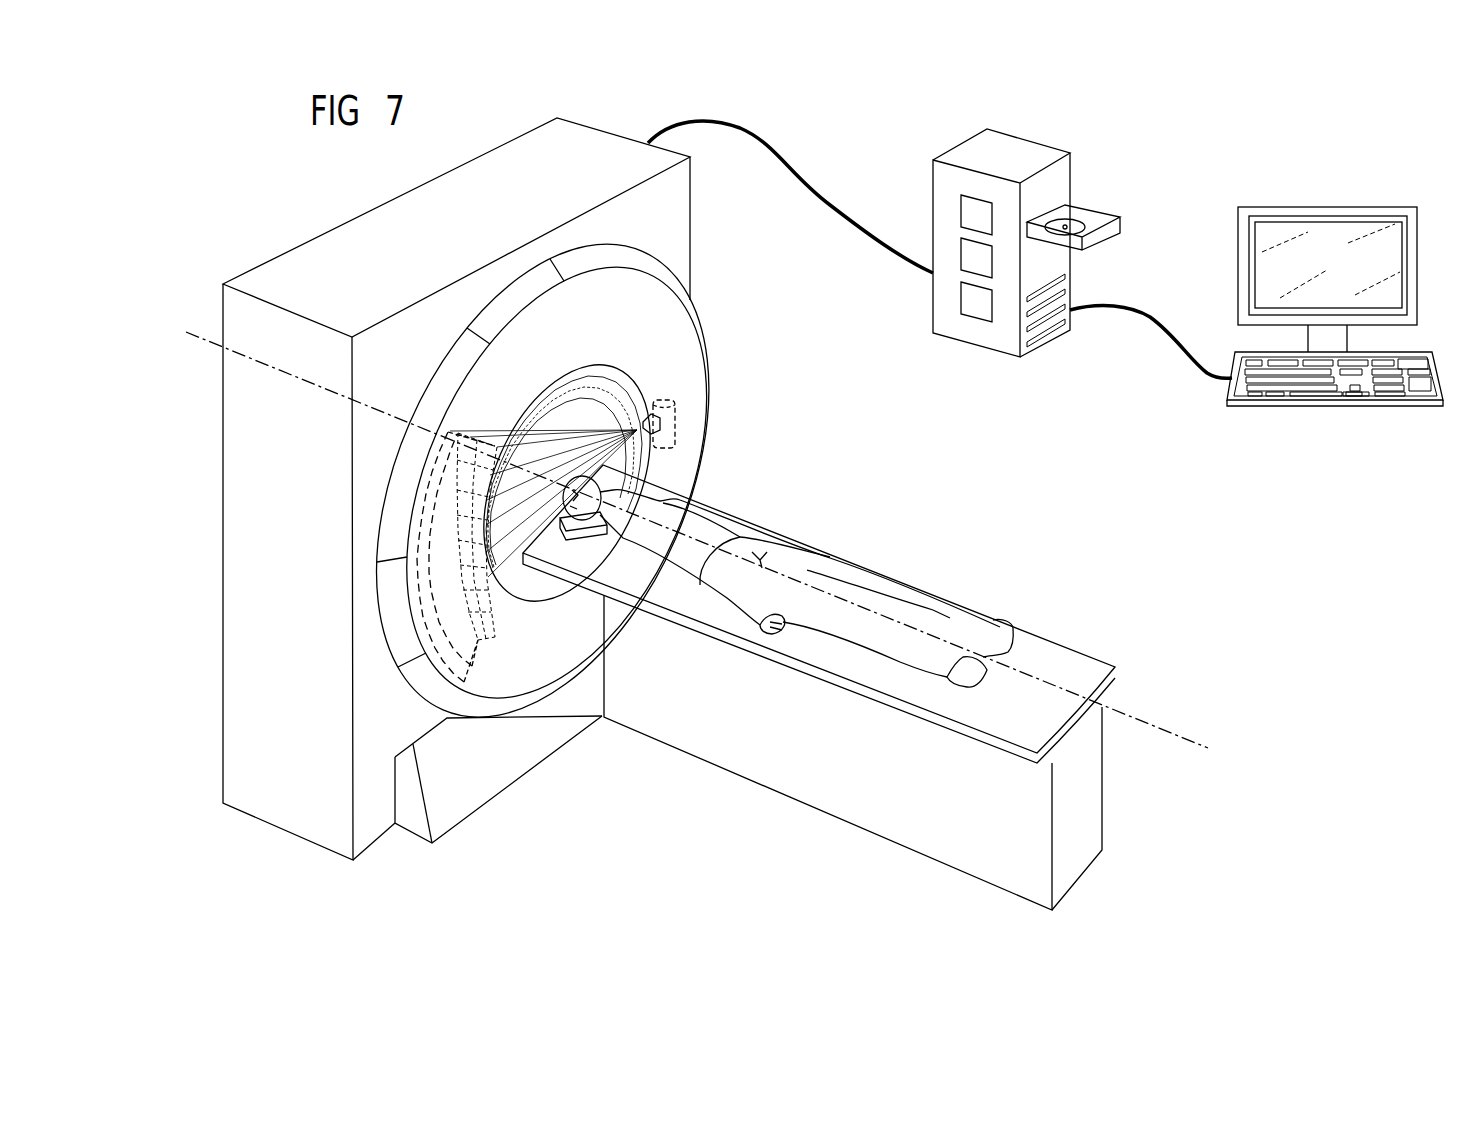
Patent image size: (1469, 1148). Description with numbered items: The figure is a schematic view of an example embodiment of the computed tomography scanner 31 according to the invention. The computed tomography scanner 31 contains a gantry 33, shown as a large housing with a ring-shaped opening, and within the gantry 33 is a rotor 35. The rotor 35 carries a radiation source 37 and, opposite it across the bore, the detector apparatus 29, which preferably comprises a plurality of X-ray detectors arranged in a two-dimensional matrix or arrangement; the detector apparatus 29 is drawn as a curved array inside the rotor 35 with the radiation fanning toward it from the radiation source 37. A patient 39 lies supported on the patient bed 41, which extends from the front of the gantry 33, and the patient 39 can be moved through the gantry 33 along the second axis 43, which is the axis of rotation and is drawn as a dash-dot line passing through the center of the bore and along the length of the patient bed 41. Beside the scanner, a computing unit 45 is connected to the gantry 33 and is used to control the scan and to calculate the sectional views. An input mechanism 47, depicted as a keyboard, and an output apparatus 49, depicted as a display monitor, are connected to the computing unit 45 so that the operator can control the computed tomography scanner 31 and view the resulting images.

The detector apparatus 29 is at (476, 645).
The computed tomography scanner 31 is at (666, 489).
The gantry 33 is at (312, 218).
The rotor 35 is at (688, 341).
The radiation source 37 is at (678, 425).
The patient 39 is at (872, 593).
The patient bed 41 is at (918, 837).
The second axis 43 is at (200, 341).
The computing unit 45 is at (1020, 150).
The input mechanism 47 is at (1230, 390).
The output apparatus 49 is at (1245, 270).